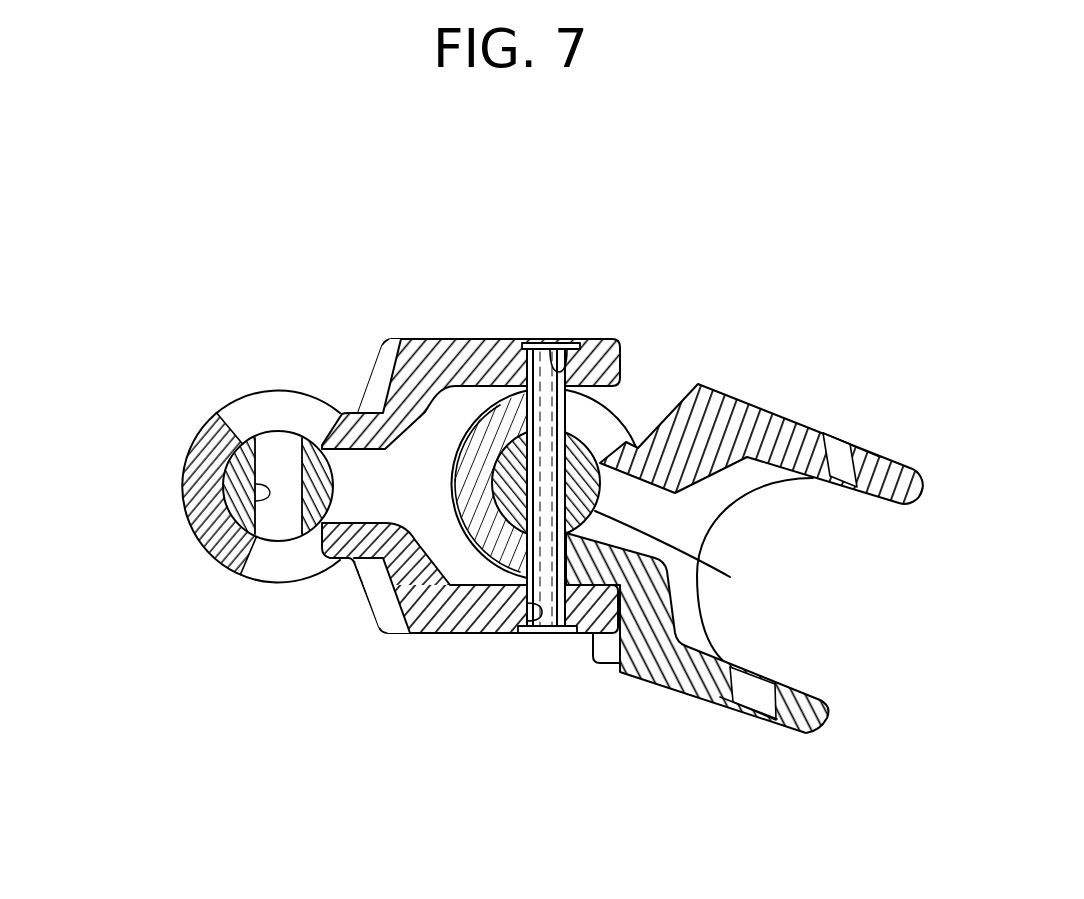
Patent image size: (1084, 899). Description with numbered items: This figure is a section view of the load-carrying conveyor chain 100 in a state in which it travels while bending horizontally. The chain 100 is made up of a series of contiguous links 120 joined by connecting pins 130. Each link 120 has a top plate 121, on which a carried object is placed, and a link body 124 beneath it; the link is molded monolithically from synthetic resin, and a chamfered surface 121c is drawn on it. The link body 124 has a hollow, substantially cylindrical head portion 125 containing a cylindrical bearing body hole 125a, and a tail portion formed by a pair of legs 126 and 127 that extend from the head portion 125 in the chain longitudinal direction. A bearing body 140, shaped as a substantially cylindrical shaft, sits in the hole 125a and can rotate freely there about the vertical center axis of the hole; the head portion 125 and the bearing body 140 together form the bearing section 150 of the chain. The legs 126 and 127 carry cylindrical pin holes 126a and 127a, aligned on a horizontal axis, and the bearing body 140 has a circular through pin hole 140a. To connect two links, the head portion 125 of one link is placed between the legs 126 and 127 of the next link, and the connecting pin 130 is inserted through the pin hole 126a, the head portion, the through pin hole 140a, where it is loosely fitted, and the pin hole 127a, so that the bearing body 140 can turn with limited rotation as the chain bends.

The chain 100 is at (456, 745).
The link 120 is at (470, 338).
The top plate 121 is at (693, 506).
The chamfered surface 121c is at (372, 392).
The link body 124 is at (452, 283).
The head portion 125 is at (200, 463).
The bearing body hole 125a is at (262, 488).
The leg 126 is at (440, 342).
The pin hole 126a is at (550, 342).
The leg 127 is at (460, 600).
The pin hole 127a is at (537, 605).
The connecting pin 130 is at (546, 342).
The bearing body 140 is at (256, 462).
The through pin hole 140a is at (271, 500).
The bearing section 150 is at (242, 355).